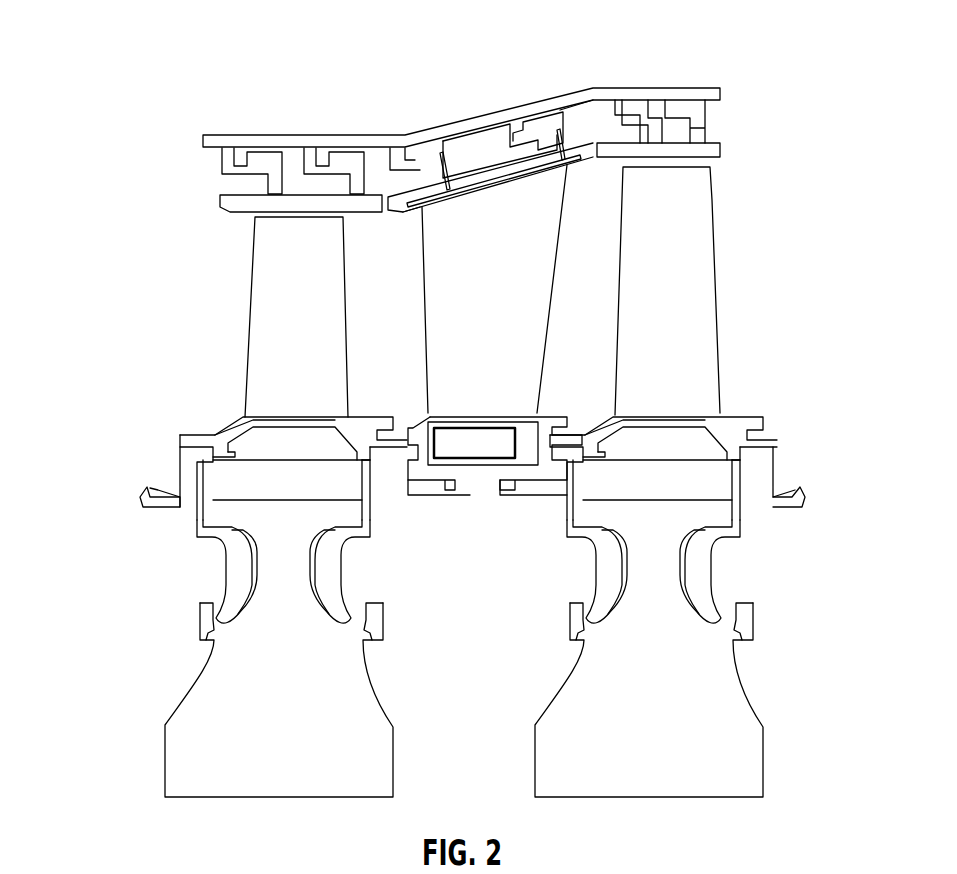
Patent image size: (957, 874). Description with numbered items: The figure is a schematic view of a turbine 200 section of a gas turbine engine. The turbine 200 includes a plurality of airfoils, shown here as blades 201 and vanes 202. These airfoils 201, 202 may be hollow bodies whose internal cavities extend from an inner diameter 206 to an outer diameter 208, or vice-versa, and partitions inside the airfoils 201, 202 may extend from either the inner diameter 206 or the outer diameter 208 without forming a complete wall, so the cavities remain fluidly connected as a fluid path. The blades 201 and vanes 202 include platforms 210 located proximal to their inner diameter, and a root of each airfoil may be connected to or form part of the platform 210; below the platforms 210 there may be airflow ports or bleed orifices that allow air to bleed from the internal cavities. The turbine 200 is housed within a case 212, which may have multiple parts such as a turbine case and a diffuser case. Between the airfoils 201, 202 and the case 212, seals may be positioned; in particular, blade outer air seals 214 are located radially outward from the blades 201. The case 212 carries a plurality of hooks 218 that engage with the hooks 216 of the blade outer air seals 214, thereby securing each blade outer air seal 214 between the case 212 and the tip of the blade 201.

The turbine 200 is at (140, 95).
The blade 201 is at (323, 265).
The vane 202 is at (528, 245).
The inner diameter 206 is at (424, 397).
The outer diameter 208 is at (243, 230).
The platform 210 is at (555, 418).
The case 212 is at (482, 120).
The blade outer air seal 214 is at (287, 200).
The hook 216 is at (263, 157).
The hook 218 is at (343, 157).